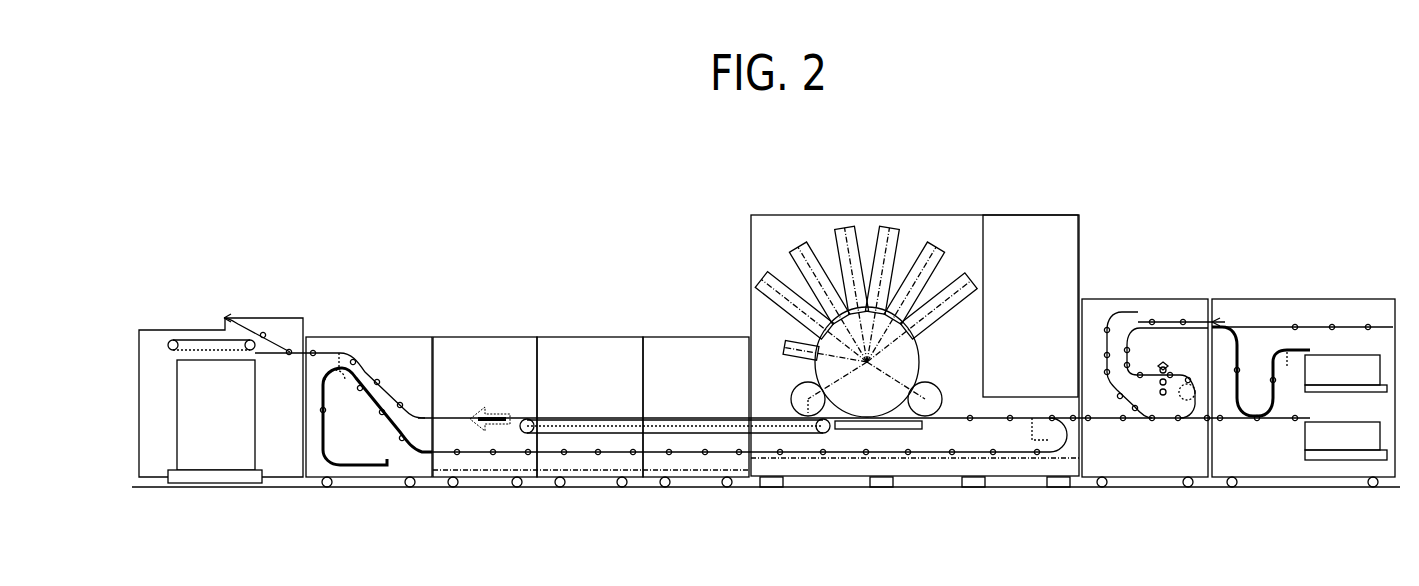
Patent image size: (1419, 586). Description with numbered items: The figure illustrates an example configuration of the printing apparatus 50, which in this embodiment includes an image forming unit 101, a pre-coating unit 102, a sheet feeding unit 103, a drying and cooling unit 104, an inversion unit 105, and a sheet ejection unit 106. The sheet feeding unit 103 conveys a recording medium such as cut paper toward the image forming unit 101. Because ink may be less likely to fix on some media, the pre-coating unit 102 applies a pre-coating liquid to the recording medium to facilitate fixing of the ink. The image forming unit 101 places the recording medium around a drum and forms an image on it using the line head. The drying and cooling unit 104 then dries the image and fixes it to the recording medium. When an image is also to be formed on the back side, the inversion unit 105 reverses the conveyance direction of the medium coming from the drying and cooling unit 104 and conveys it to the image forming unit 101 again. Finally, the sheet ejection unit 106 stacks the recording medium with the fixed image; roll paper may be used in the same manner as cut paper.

The printing apparatus 50 is at (749, 165).
The image forming unit 101 is at (942, 215).
The pre-coating unit 102 is at (1158, 299).
The sheet feeding unit 103 is at (1307, 299).
The drying and cooling unit 104 is at (674, 337).
The inversion unit 105 is at (367, 337).
The sheet ejection unit 106 is at (273, 318).